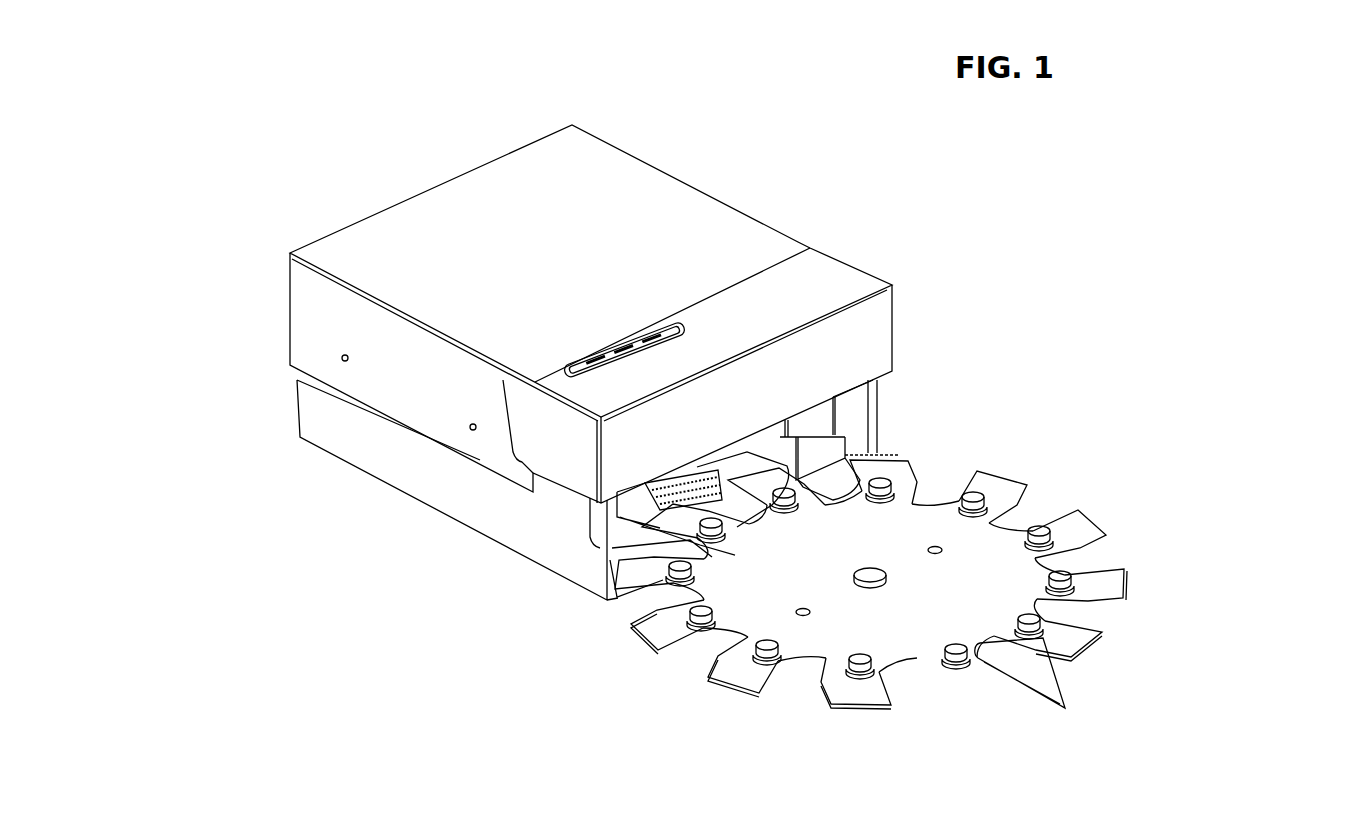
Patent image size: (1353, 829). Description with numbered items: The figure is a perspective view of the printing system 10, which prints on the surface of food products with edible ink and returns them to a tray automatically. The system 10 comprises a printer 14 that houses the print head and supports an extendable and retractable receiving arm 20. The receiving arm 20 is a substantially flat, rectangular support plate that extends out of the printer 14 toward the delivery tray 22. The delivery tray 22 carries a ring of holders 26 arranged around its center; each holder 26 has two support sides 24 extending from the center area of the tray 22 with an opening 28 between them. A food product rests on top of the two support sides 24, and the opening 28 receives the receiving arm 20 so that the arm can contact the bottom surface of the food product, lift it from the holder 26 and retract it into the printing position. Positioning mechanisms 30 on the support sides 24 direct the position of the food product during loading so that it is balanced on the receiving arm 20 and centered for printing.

The printing system 10 is at (717, 449).
The printer 14 is at (920, 303).
The receiving arm 20 is at (648, 503).
The delivery tray 22 is at (964, 535).
The support sides 24 is at (1083, 527).
The holder 26 is at (964, 607).
The opening 28 is at (1092, 555).
The positioning mechanism 30 is at (982, 664).